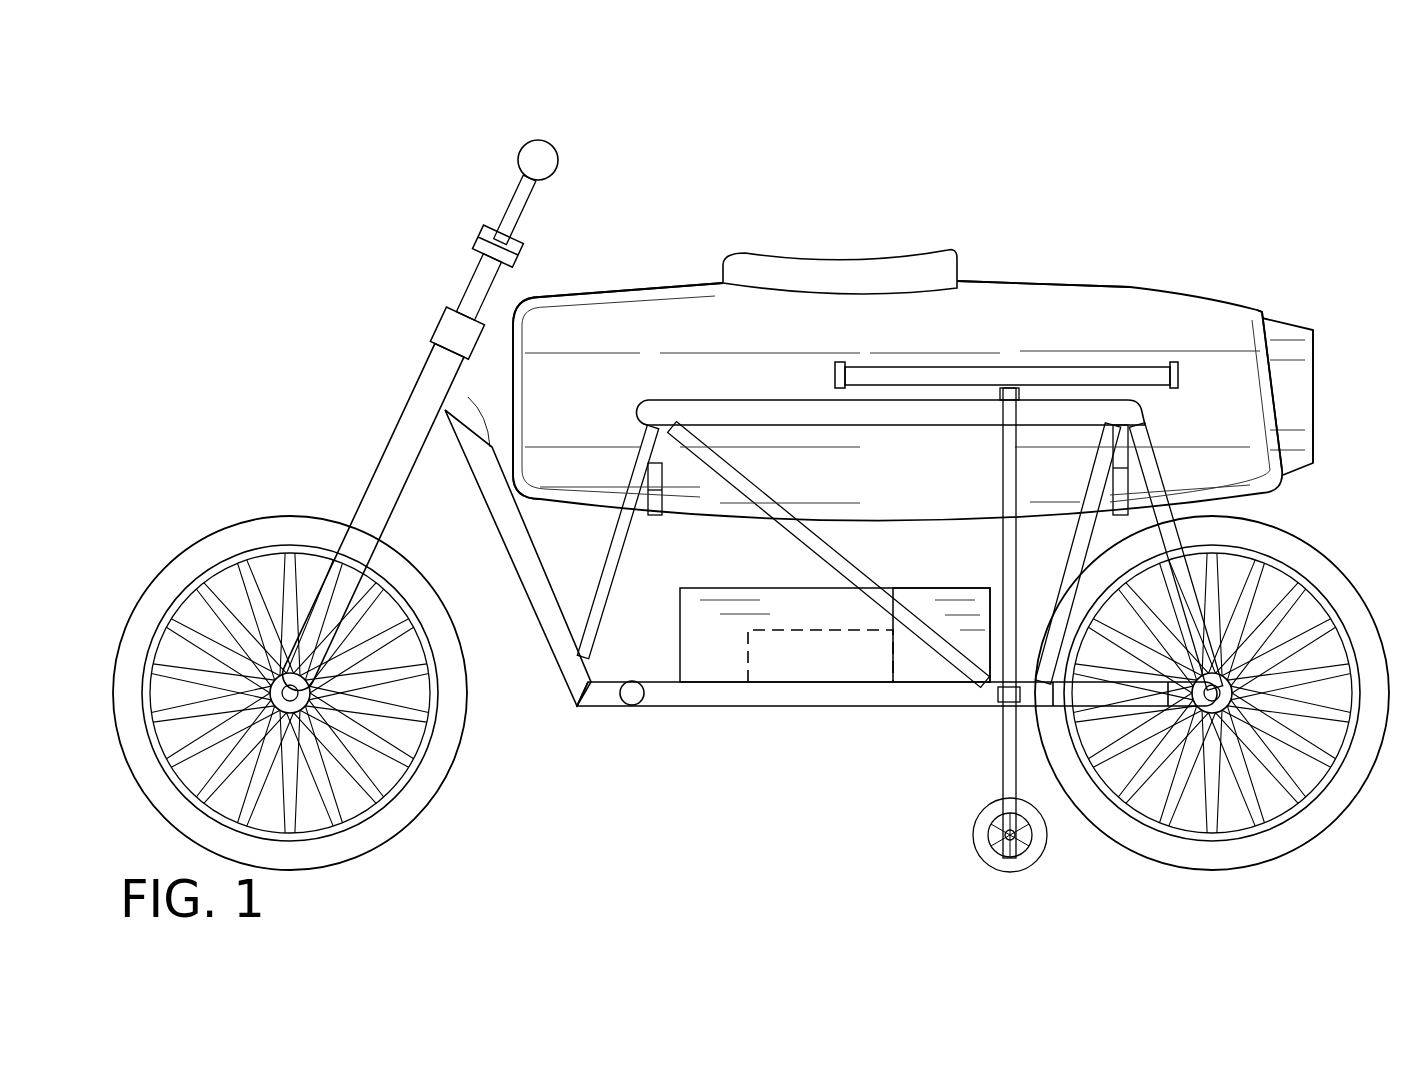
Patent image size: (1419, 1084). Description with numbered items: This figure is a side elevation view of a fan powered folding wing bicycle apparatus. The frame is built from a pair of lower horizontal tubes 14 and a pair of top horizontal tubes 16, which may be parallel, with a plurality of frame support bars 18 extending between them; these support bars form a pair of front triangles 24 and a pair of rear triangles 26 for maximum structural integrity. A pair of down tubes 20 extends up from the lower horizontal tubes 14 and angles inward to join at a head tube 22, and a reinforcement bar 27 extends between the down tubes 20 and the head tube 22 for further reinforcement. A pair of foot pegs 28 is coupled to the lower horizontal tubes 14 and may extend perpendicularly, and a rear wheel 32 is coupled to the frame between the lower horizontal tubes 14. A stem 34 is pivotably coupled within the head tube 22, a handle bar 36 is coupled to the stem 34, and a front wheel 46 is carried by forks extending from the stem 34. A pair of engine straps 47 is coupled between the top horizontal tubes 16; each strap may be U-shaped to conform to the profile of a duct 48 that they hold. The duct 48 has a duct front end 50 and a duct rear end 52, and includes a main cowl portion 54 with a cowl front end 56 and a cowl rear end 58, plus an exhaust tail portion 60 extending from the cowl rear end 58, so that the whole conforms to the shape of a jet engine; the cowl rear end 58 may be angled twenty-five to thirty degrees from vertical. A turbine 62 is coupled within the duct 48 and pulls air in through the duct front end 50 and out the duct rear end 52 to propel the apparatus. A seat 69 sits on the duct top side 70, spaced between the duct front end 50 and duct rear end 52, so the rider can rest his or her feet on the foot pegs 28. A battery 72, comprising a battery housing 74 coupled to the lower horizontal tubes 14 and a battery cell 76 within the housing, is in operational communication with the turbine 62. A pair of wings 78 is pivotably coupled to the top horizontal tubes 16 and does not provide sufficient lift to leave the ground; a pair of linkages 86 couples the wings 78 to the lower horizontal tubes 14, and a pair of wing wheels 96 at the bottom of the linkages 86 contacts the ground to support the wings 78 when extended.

The lower horizontal tubes 14 is at (757, 695).
The top horizontal tubes 16 is at (667, 412).
The frame support bars 18 is at (1173, 543).
The down tubes 20 is at (533, 573).
The head tube 22 is at (420, 393).
The front triangles 24 is at (660, 553).
The rear triangles 26 is at (1133, 519).
The reinforcement bar 27 is at (480, 373).
The foot pegs 28 is at (632, 690).
The rear wheel 32 is at (1210, 856).
The stem 34 is at (483, 283).
The handle bar 36 is at (522, 200).
The front wheel 46 is at (427, 788).
The engine straps 47 is at (1122, 487).
The duct 48 is at (1072, 335).
The duct front end 50 is at (513, 425).
The duct rear end 52 is at (1313, 365).
The main cowl portion 54 is at (627, 323).
The cowl front end 56 is at (512, 350).
The cowl rear end 58 is at (1262, 308).
The exhaust tail portion 60 is at (1283, 345).
The turbine 62 is at (587, 698).
The seat 69 is at (850, 273).
The duct top side 70 is at (1003, 287).
The battery 72 is at (917, 658).
The battery housing 74 is at (928, 588).
The battery cell 76 is at (808, 653).
The wings 78 is at (1000, 372).
The linkages 86 is at (1010, 717).
The wing wheels 96 is at (1002, 863).